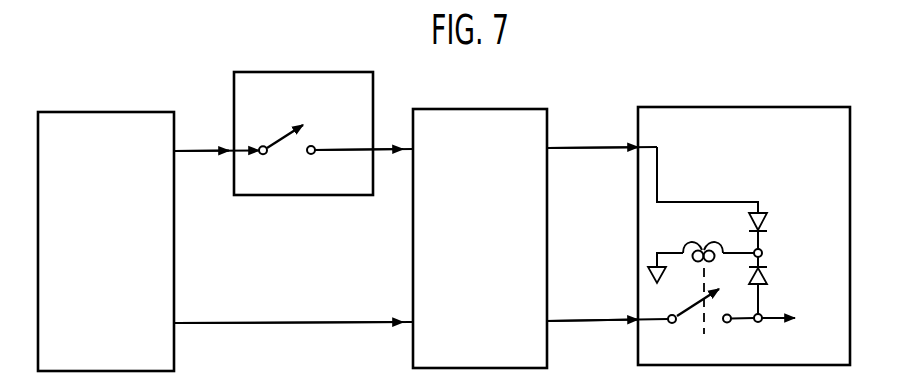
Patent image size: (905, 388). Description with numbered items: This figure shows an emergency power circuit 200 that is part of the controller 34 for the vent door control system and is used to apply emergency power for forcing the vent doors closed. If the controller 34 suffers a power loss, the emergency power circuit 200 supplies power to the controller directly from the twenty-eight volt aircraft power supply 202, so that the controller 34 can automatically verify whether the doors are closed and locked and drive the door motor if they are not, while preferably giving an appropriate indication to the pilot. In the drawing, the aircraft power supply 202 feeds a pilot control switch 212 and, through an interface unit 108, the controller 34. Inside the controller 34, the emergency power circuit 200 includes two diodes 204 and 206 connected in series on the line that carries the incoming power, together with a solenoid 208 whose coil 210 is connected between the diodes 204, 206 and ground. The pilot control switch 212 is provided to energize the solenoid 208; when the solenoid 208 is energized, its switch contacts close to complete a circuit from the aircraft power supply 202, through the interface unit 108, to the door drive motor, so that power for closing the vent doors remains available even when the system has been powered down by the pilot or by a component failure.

The aircraft power supply 202 is at (137, 112).
The pilot control switch 212 is at (283, 72).
The interface unit 108 is at (535, 108).
The controller 34 is at (688, 107).
The emergency power circuit 200 is at (778, 202).
The diode 204 is at (770, 226).
The diode 206 is at (770, 273).
The coil 210 is at (703, 243).
The solenoid 208 is at (692, 273).